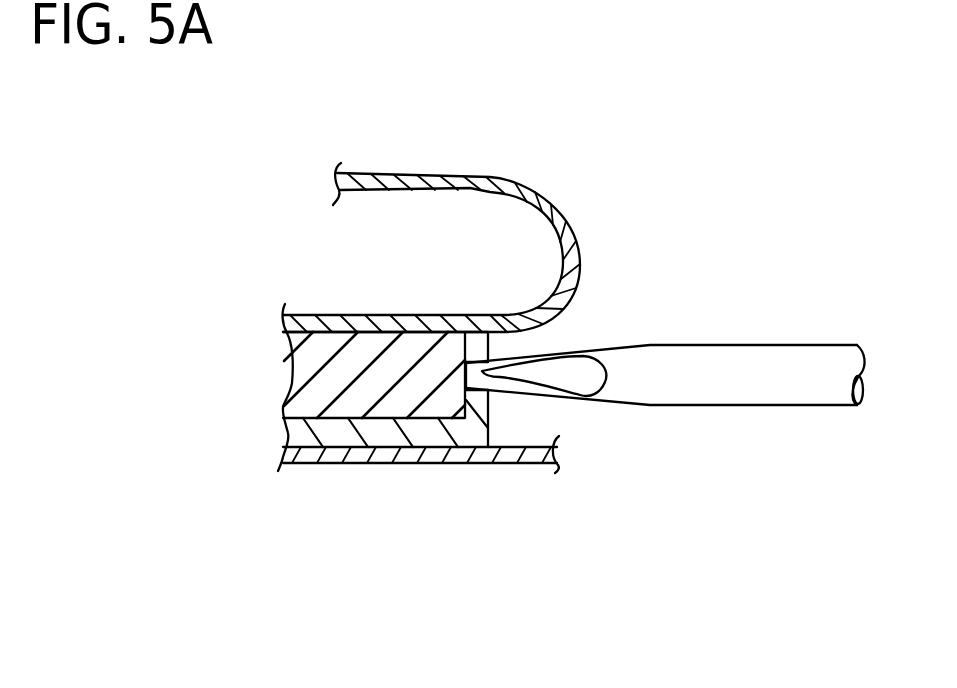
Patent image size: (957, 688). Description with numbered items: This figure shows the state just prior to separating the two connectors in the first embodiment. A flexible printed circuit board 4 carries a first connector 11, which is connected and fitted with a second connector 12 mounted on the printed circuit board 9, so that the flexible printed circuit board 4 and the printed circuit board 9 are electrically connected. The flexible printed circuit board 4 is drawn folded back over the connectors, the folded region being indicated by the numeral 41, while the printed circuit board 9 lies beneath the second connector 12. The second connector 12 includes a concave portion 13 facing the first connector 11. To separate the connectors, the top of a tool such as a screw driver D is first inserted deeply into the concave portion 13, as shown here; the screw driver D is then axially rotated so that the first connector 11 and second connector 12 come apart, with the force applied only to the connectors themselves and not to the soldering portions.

The flexible printed circuit board 4 is at (468, 150).
The bent portion 41 is at (543, 191).
The first connector 11 is at (488, 345).
The concave portion 13 is at (557, 357).
The second connector 12 is at (488, 420).
The printed circuit board 9 is at (481, 463).
The screw driver D is at (772, 346).